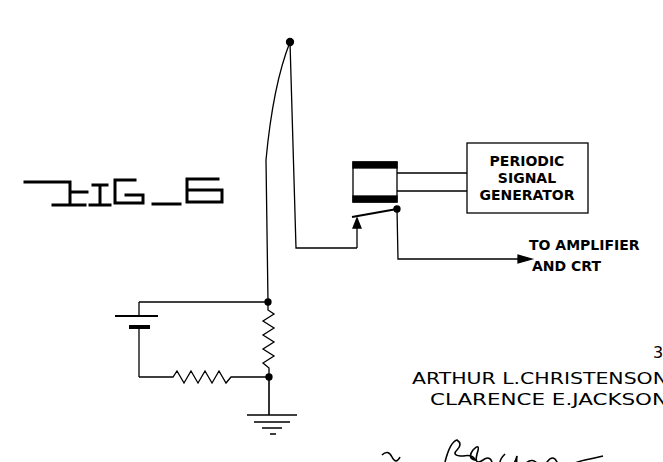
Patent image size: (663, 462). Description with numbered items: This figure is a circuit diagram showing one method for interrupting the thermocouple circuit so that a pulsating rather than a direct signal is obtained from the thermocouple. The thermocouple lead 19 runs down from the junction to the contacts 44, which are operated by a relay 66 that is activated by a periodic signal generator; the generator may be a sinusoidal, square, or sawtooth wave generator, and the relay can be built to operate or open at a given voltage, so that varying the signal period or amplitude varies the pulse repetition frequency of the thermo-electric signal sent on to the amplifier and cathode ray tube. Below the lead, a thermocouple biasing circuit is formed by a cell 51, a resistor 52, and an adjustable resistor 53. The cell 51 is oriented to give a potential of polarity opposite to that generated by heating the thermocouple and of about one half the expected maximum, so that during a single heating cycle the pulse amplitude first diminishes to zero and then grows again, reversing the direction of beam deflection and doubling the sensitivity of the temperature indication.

The electrode / probe wire 19 is at (268, 116).
The contacts 44 is at (378, 222).
The cell 51 is at (125, 320).
The resistor 52 is at (205, 385).
The adjustable resistor 53 is at (275, 341).
The relay 66 is at (375, 162).